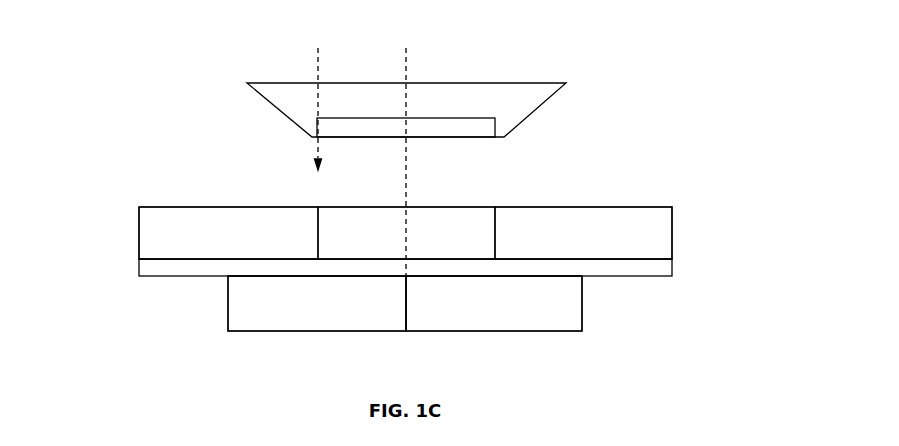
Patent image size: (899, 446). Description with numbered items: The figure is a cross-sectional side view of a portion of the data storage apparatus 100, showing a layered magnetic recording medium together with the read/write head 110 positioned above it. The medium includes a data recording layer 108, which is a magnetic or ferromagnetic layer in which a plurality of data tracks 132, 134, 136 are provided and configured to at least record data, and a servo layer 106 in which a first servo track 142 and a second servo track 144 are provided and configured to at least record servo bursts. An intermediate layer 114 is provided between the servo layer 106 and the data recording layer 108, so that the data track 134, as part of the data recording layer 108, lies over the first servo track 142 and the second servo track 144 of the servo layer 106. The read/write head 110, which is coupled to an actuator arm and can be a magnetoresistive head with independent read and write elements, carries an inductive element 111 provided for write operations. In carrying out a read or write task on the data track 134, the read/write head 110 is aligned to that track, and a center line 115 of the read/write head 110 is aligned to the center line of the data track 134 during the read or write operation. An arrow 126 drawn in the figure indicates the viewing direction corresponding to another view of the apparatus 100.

The semiconductor device / display apparatus 100 is at (759, 131).
The read/write head 110 is at (566, 84).
The inductive element 111 is at (497, 130).
The arrow 126 is at (315, 96).
The center line 115 is at (405, 149).
The data recording layer 108 is at (135, 224).
The data track 132 is at (187, 215).
The data track 134 is at (427, 215).
The data track 136 is at (648, 218).
The intermediate layer 114 is at (139, 275).
The servo layer 106 is at (224, 313).
The first servo track 142 is at (330, 325).
The second servo track 144 is at (528, 325).